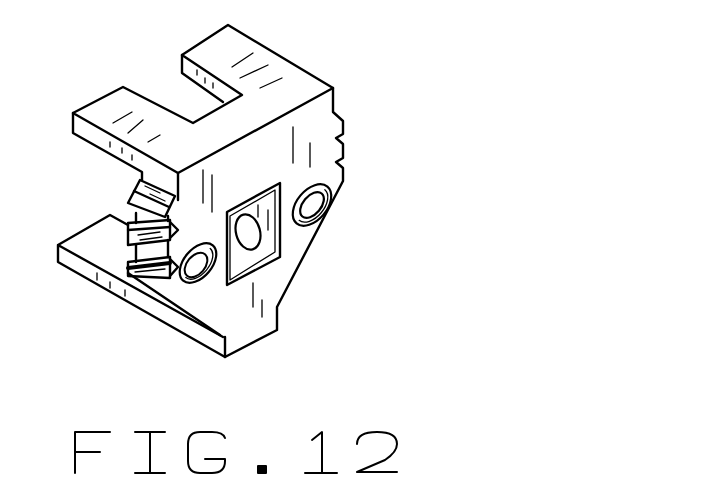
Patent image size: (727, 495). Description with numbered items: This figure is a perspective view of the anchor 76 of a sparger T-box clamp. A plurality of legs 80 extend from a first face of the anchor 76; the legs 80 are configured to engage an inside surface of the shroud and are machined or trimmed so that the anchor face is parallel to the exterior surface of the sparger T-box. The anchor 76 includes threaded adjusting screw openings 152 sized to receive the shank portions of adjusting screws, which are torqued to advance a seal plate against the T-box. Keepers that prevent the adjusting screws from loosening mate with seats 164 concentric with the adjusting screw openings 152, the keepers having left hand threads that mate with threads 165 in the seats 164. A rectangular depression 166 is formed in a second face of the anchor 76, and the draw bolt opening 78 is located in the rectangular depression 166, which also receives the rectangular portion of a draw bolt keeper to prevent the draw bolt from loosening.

The anchor 76 is at (336, 68).
The legs 80 is at (132, 100).
The adjusting screw openings 152 is at (330, 207).
The draw bolt opening 78 is at (238, 232).
The rectangular depression 166 is at (260, 267).
The threads 165 is at (183, 292).
The seats 164 is at (207, 278).